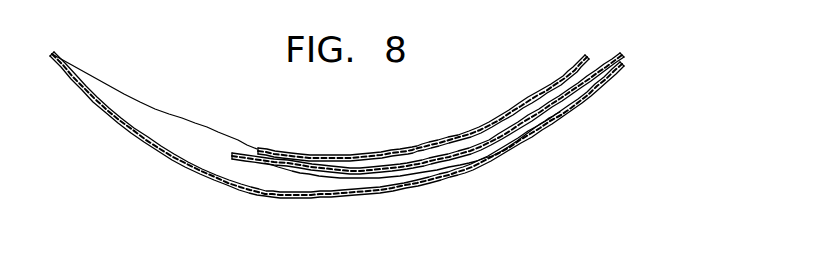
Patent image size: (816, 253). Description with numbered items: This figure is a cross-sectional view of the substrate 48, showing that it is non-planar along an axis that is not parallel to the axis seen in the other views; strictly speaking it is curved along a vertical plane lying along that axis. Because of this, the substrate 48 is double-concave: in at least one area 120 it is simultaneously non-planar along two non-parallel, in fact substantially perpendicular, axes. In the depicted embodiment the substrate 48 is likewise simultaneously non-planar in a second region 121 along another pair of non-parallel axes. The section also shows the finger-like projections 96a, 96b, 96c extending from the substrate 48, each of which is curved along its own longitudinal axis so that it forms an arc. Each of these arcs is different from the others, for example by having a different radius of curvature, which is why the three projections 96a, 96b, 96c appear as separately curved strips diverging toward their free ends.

The substrate 48 is at (136, 106).
The finger-like projection 96a is at (585, 55).
The finger-like projection 96b is at (622, 52).
The finger-like projection 96c is at (616, 67).
The area 120 is at (180, 137).
The region 121 is at (336, 186).